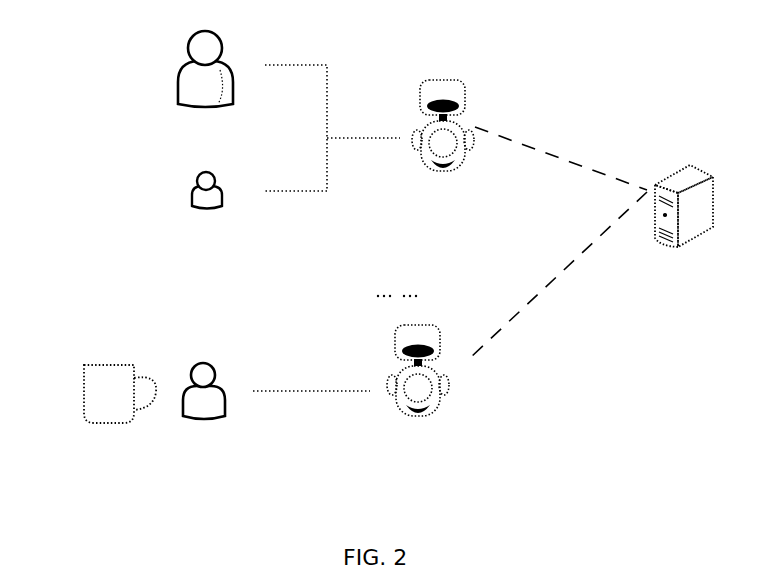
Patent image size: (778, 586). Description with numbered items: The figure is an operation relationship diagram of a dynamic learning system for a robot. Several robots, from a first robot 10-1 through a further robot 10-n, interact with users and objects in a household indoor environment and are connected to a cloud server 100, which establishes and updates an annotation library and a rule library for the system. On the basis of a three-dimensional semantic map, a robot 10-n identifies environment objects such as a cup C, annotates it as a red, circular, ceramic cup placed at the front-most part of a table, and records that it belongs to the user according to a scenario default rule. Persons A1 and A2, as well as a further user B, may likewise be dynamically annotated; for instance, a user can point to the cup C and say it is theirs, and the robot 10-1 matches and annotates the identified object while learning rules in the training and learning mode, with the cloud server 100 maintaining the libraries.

The person A1 is at (200, 105).
The person A2 is at (186, 212).
The user B is at (195, 417).
The cup C is at (103, 403).
The robot 10-1 is at (433, 175).
The robot 10-n is at (413, 420).
The cloud server 100 is at (670, 247).